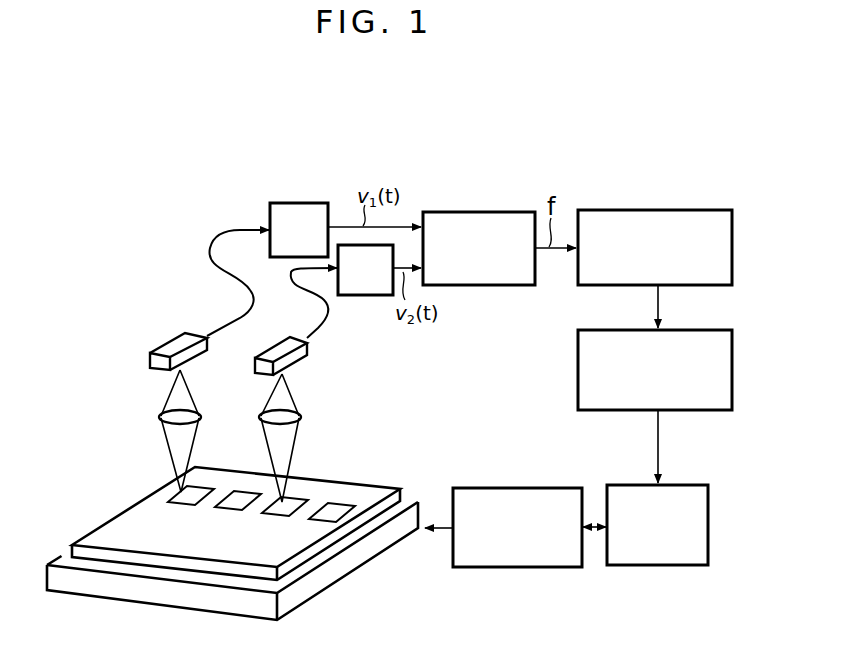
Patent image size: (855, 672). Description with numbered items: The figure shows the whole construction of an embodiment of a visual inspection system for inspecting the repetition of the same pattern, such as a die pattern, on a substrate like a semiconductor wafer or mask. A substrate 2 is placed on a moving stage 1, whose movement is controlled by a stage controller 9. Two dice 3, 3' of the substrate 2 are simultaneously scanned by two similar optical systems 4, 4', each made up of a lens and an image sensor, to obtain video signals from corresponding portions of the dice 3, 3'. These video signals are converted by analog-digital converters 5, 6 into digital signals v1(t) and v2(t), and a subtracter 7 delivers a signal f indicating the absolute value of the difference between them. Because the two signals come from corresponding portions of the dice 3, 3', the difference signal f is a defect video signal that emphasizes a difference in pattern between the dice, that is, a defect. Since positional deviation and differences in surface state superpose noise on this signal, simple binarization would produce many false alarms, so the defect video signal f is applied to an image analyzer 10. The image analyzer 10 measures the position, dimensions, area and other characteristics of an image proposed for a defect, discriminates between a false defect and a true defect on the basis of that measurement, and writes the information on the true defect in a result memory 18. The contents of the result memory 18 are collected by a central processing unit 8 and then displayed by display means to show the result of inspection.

The moving stage 1 is at (128, 593).
The substrate 2 is at (108, 528).
The die 3 is at (200, 514).
The die 3' is at (293, 525).
The optical system 4 is at (143, 412).
The optical system 4' is at (310, 419).
The analog-digital converter 5 is at (298, 203).
The analog-digital converter 6 is at (365, 295).
The subtracter 7 is at (478, 212).
The central processing unit 8 is at (687, 485).
The stage controller 9 is at (523, 488).
The image analyzer 10 is at (653, 210).
The result memory 18 is at (683, 330).